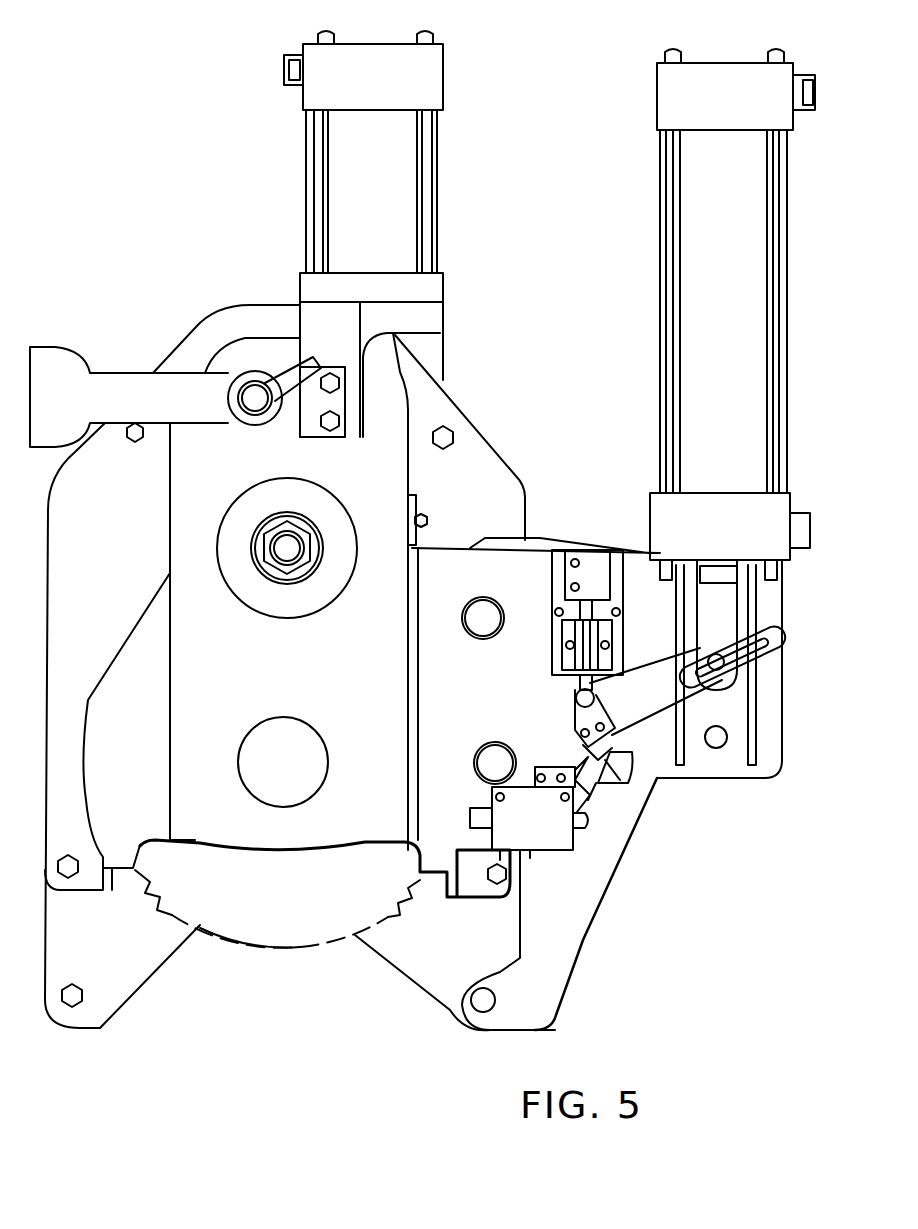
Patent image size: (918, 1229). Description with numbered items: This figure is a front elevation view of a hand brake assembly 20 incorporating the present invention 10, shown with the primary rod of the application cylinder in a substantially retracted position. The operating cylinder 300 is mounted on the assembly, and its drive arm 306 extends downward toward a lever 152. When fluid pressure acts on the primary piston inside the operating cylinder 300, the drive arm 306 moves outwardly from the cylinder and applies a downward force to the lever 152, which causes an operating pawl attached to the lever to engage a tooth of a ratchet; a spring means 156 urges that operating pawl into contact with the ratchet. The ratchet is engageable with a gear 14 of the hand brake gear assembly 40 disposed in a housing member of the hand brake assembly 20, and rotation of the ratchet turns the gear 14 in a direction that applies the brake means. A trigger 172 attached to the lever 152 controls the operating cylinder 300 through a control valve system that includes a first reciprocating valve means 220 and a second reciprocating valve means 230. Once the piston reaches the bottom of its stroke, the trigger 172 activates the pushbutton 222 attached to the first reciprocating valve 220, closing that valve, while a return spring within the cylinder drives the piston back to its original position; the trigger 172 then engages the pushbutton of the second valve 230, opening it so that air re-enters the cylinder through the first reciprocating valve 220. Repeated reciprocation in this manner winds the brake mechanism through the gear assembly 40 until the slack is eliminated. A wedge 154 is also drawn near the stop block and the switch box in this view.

The apparatus 10 is at (560, 146).
The hand brake assembly 20 is at (168, 312).
The operating cylinder 300 is at (646, 343).
The drive arm 306 is at (712, 598).
The lever 152 is at (768, 700).
The second reciprocating valve means 230 is at (585, 553).
The trigger 172 is at (576, 700).
The spring means 156 is at (628, 742).
The wedge 154 is at (620, 768).
The pushbutton 222 is at (588, 824).
The first reciprocating valve means 220 is at (561, 852).
The gear 14 is at (165, 900).
The hand brake gear assembly 40 is at (287, 966).